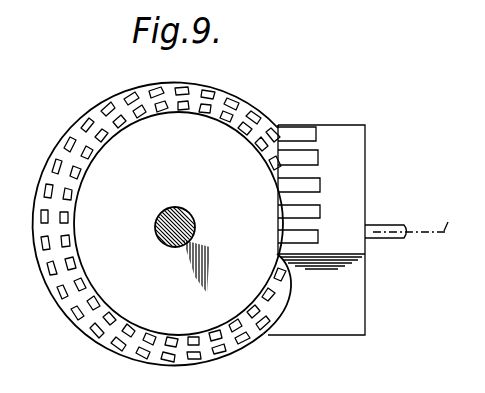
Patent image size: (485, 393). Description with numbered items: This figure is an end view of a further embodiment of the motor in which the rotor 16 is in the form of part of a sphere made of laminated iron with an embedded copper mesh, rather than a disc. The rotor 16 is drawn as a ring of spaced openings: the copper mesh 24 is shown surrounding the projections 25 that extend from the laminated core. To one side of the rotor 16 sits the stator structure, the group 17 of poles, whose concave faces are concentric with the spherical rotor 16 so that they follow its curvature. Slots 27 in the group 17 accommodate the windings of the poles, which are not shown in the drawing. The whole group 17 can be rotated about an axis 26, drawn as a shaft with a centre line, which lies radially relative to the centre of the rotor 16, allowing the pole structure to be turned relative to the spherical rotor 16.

The rotor 16 is at (180, 228).
The group of poles 17 is at (328, 320).
The copper mesh 24 is at (222, 97).
The projections 25 is at (248, 102).
The axis 26 is at (438, 236).
The slots 27 is at (286, 236).